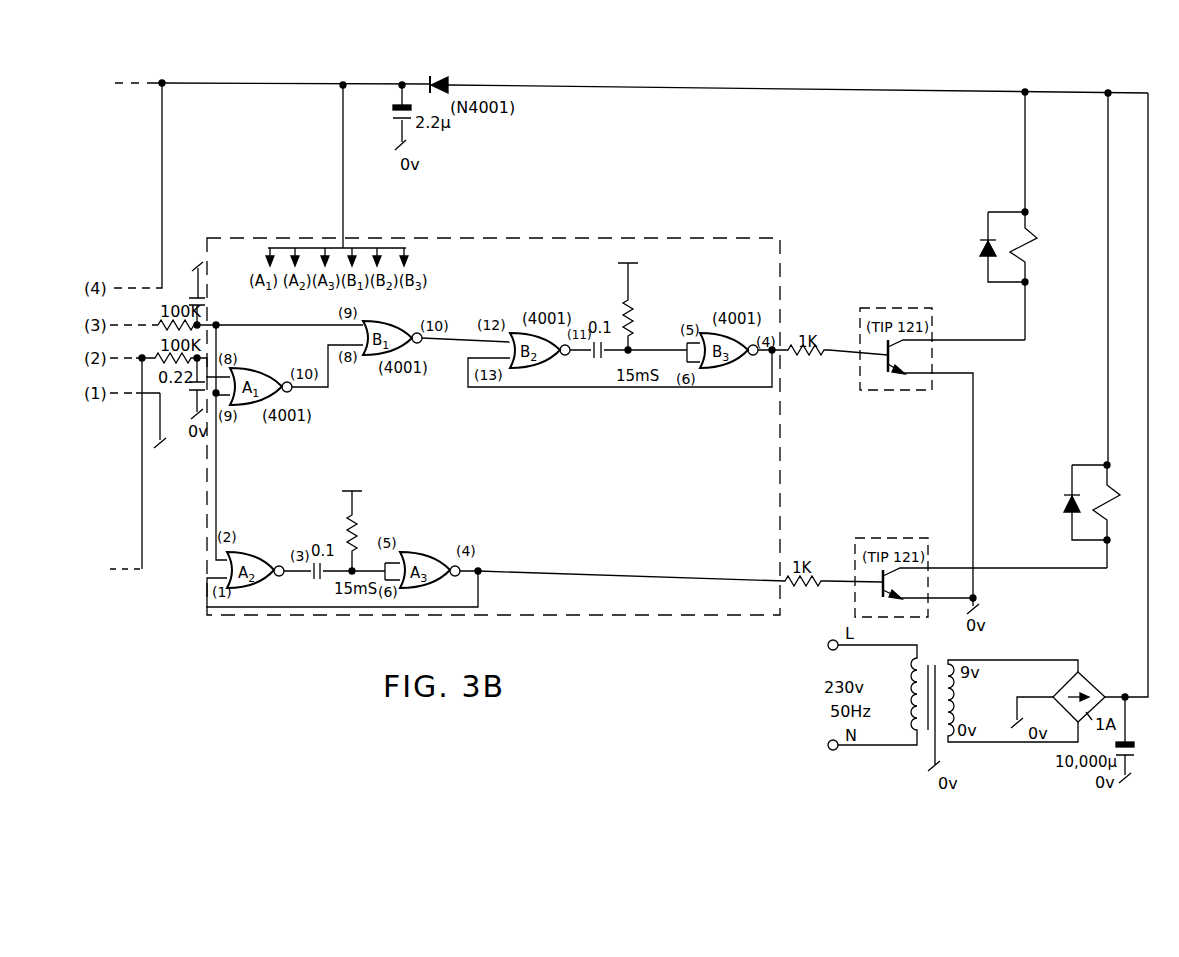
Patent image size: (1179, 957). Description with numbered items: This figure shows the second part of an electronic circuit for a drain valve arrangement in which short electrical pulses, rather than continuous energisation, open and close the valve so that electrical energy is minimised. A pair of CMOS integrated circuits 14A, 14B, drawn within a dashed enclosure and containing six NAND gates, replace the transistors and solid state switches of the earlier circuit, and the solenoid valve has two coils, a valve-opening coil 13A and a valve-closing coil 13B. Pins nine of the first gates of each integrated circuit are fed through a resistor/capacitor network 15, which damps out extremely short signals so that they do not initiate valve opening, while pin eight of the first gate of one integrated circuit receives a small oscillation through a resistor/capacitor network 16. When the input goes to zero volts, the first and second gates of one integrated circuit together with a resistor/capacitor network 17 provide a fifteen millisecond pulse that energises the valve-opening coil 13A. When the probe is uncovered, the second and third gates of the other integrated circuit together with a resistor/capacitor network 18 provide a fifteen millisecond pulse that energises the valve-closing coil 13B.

The valve-opening solenoid coil 13A is at (1058, 239).
The valve-closing solenoid coil 13B is at (1115, 538).
The CMOS integrated circuit 14A is at (493, 398).
The CMOS integrated circuit 14B is at (493, 426).
The resistor/capacitor network 15 is at (170, 266).
The resistor/capacitor network 16 is at (173, 412).
The resistor/capacitor network 17 is at (668, 296).
The resistor/capacitor network 18 is at (308, 531).